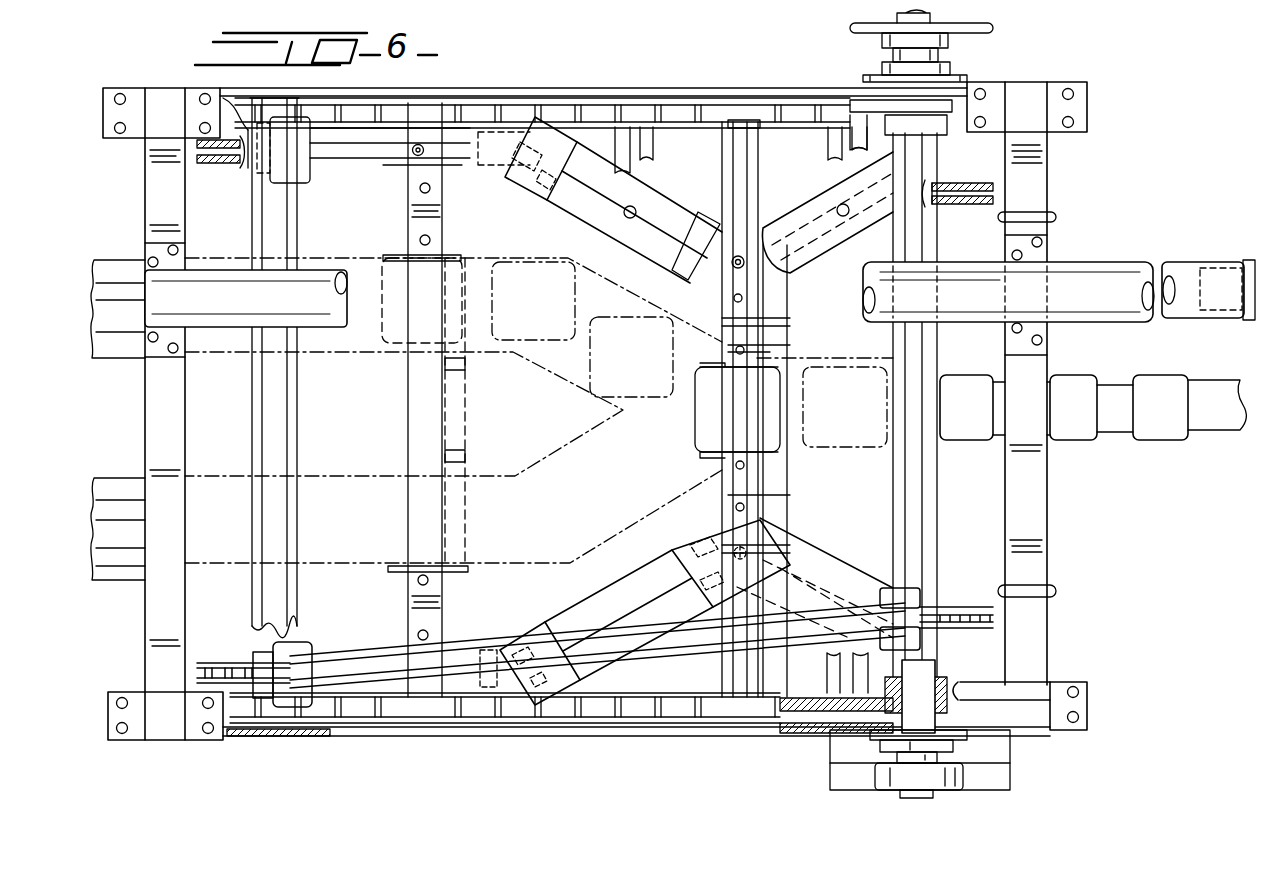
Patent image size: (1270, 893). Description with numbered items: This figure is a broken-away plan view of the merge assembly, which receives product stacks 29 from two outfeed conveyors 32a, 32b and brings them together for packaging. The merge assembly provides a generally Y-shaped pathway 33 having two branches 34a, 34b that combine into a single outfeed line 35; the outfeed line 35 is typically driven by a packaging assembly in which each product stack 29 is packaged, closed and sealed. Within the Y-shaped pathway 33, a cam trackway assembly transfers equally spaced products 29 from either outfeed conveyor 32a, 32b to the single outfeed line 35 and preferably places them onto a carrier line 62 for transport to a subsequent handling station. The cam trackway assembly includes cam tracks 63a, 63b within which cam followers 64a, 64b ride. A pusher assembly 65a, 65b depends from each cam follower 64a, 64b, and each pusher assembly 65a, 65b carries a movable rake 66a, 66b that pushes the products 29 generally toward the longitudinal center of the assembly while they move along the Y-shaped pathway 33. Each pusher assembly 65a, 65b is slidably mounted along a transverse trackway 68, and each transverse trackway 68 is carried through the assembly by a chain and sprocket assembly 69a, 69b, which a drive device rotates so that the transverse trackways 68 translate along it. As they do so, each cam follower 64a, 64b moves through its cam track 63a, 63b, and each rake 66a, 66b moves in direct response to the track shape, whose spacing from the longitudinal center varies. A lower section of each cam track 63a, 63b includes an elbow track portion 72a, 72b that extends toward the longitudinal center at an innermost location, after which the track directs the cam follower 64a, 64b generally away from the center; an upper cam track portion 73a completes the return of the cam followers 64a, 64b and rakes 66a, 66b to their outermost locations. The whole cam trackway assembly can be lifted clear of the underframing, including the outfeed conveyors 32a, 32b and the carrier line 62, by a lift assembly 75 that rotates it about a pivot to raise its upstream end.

The product stack 29 is at (548, 318).
The outfeed conveyor 32a is at (132, 480).
The outfeed conveyor 32b is at (118, 278).
The Y-shaped pathway 33 is at (607, 443).
The branch 34a is at (330, 552).
The branch 34b is at (370, 262).
The outfeed line 35 is at (857, 362).
The carrier line 62 is at (1112, 410).
The cam track 63a is at (517, 626).
The cam track 63b is at (464, 178).
The cam follower 64a is at (762, 550).
The cam follower 64b is at (416, 153).
The pusher assembly 65a is at (728, 498).
The pusher assembly 65b is at (722, 318).
The movable rake 66a is at (712, 456).
The movable rake 66b is at (705, 362).
The transverse trackway 68 is at (643, 156).
The chain and sprocket assembly 69a is at (648, 723).
The chain and sprocket assembly 69b is at (688, 102).
The elbow track portion 72a is at (707, 542).
The elbow track portion 72b is at (665, 246).
The upper cam track portion 73a is at (781, 644).
The lift assembly 75 is at (1124, 271).